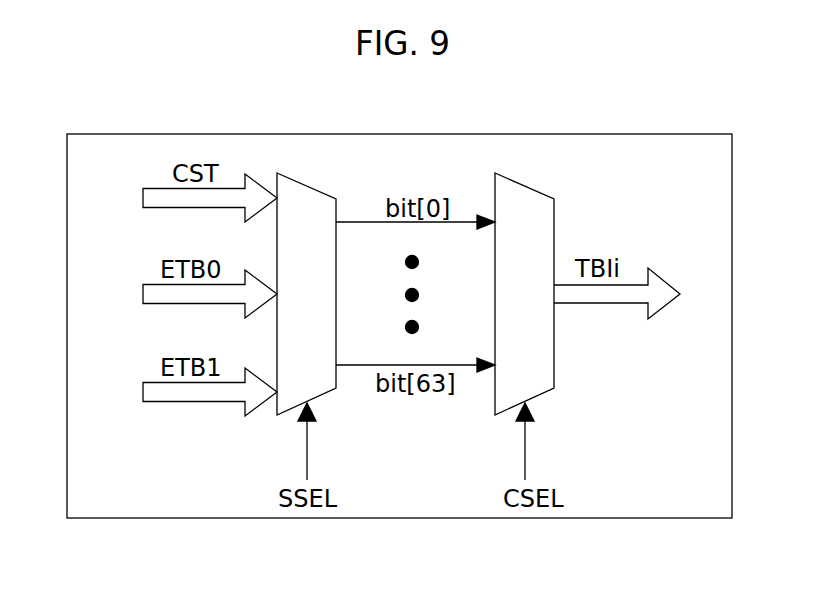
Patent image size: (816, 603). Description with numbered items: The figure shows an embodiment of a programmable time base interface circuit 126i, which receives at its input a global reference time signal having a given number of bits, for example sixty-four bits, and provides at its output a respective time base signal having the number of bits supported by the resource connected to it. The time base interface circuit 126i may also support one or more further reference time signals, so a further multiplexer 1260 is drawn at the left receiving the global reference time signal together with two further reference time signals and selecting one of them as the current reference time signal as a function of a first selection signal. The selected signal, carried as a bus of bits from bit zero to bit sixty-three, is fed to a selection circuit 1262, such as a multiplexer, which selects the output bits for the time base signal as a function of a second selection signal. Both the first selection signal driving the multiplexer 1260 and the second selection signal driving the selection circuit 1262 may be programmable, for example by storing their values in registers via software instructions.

The programmable time base interface circuit 126i is at (647, 512).
The further multiplexer 1260 is at (313, 198).
The selection circuit 1262 is at (533, 198).